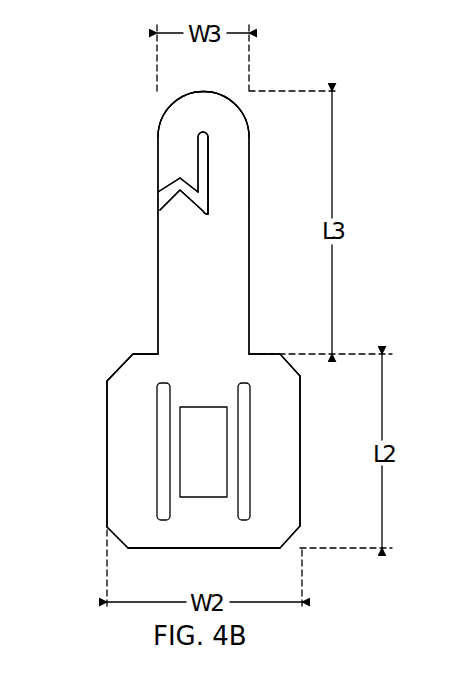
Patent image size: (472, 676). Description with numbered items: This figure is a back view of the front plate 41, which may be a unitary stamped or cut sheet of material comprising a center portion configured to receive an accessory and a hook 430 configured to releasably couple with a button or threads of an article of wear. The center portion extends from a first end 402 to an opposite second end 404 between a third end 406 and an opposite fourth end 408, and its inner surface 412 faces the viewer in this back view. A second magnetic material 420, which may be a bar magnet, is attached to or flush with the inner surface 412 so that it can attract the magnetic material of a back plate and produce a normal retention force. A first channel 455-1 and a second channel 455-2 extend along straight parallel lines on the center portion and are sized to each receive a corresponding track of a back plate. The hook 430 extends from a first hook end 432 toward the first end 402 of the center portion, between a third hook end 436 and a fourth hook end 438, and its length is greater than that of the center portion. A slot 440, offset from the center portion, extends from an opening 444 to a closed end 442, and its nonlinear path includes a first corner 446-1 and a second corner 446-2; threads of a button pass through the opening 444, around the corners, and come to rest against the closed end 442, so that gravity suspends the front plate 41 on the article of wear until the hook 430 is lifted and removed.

The front plate 41 is at (403, 106).
The hook 430 is at (158, 155).
The first hook end 432 is at (190, 91).
The closed end 442 is at (209, 126).
The slot 440 is at (214, 190).
The opening 444 is at (150, 197).
The first corner 446-1 is at (182, 181).
The second corner 446-2 is at (205, 217).
The fourth hook end 438 is at (158, 295).
The third hook end 436 is at (249, 312).
The first end 402 is at (135, 354).
The inner surface 412 is at (221, 377).
The second magnetic material 420 is at (222, 462).
The first channel 455-1 is at (250, 432).
The second channel 455-2 is at (157, 470).
The fourth end 408 is at (107, 400).
The third end 406 is at (300, 490).
The second end 404 is at (237, 548).